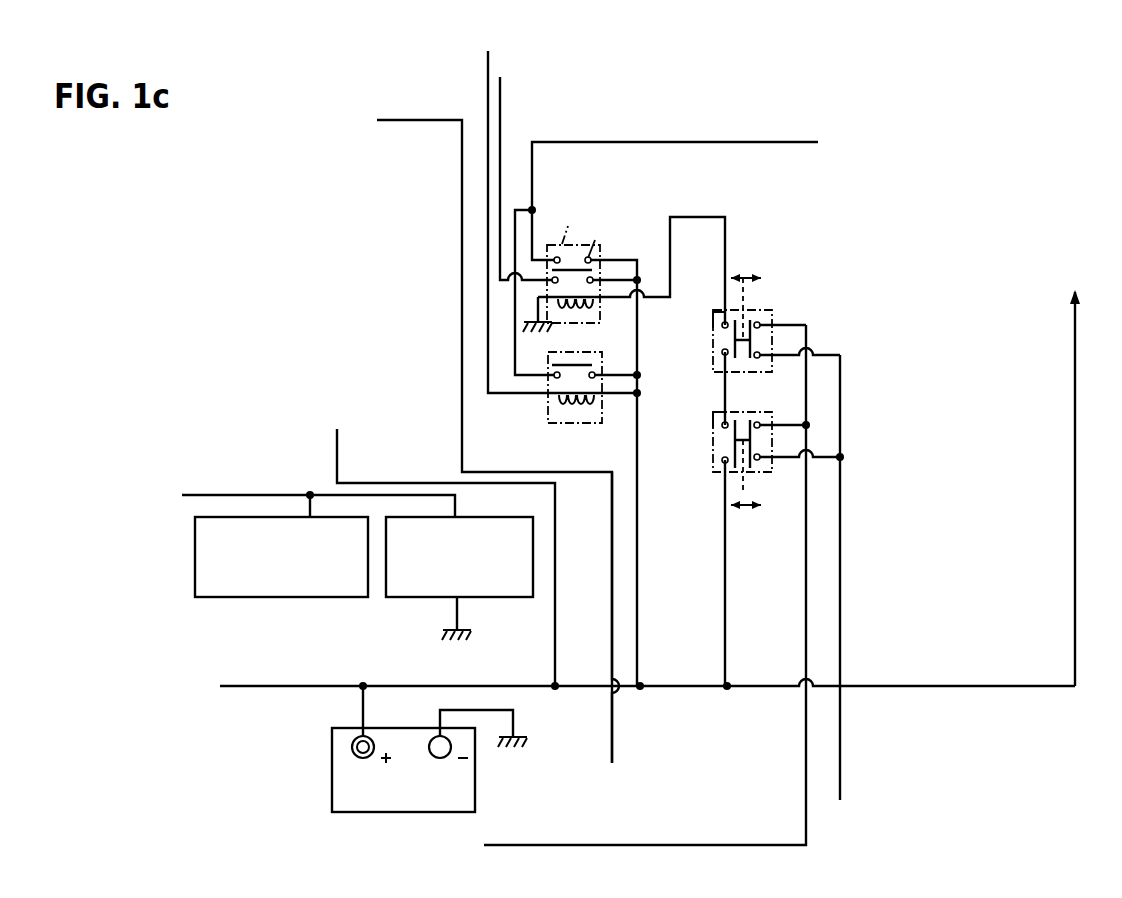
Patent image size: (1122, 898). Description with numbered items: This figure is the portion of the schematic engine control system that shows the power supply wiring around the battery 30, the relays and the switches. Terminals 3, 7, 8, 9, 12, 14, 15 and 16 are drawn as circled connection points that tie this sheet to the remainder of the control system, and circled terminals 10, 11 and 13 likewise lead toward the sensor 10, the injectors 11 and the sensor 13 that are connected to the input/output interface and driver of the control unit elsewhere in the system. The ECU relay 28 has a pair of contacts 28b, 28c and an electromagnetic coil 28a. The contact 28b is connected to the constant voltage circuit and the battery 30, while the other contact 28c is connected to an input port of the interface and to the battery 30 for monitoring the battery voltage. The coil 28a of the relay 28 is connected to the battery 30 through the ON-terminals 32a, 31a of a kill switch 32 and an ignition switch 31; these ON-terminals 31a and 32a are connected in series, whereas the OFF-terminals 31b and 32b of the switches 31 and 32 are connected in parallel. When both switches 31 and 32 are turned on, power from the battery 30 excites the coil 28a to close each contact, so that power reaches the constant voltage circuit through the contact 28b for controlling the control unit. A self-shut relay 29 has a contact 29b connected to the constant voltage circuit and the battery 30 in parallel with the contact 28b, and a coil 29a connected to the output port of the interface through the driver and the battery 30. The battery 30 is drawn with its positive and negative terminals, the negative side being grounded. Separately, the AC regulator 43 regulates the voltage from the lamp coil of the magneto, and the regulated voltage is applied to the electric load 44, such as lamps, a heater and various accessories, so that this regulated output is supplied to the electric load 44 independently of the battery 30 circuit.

The terminal 3 is at (437, 537).
The terminal 7 is at (296, 495).
The terminal 8 is at (625, 686).
The terminal 9 is at (612, 639).
The sensor 10 is at (623, 596).
The injectors 11 is at (840, 599).
The terminal 12 is at (472, 430).
The sensor 13 is at (553, 201).
The terminal 14 is at (500, 77).
The terminal 15 is at (688, 247).
The terminal 16 is at (1075, 466).
The ECU relay 28 is at (587, 438).
The electromagnetic coil 28a is at (590, 326).
The contact 28b is at (593, 256).
The contact 28c is at (593, 280).
The self-shut relay 29 is at (560, 406).
The coil 29a is at (565, 408).
The contact 29b is at (555, 378).
The battery 30 is at (475, 778).
The ignition switch 31 is at (774, 543).
The ON-terminal 31a is at (715, 412).
The OFF-terminal 31b is at (772, 463).
The kill switch 32 is at (746, 346).
The ON-terminal 32a is at (715, 326).
The OFF-terminal 32b is at (760, 358).
The AC regulator 43 is at (335, 597).
The electric load 44 is at (510, 597).